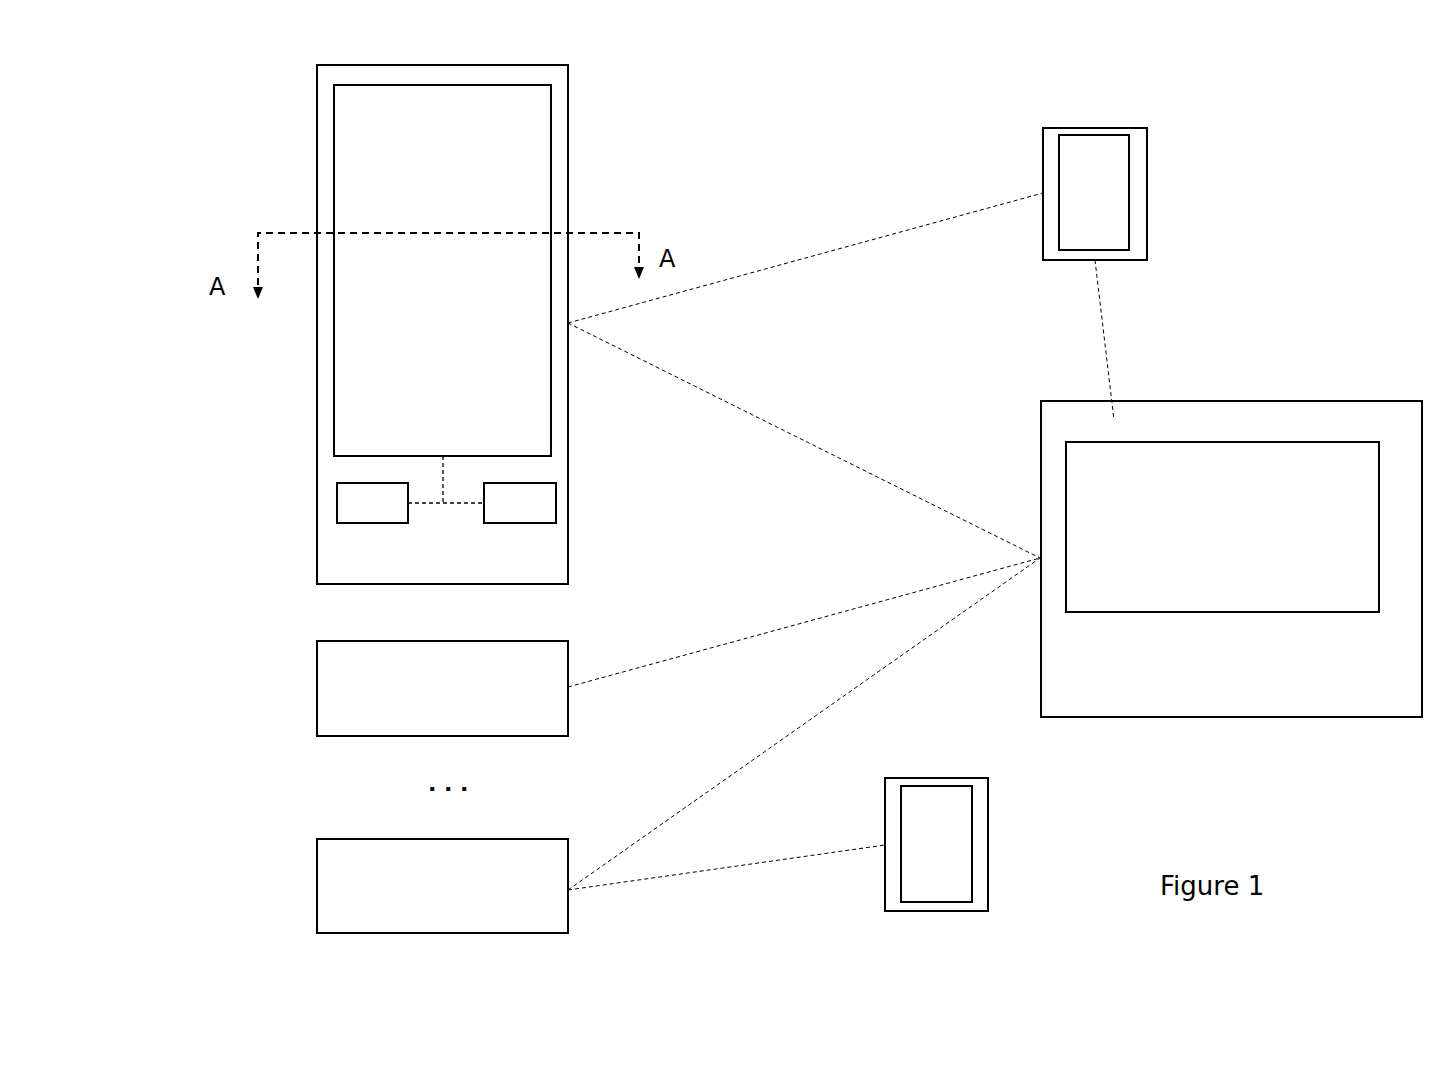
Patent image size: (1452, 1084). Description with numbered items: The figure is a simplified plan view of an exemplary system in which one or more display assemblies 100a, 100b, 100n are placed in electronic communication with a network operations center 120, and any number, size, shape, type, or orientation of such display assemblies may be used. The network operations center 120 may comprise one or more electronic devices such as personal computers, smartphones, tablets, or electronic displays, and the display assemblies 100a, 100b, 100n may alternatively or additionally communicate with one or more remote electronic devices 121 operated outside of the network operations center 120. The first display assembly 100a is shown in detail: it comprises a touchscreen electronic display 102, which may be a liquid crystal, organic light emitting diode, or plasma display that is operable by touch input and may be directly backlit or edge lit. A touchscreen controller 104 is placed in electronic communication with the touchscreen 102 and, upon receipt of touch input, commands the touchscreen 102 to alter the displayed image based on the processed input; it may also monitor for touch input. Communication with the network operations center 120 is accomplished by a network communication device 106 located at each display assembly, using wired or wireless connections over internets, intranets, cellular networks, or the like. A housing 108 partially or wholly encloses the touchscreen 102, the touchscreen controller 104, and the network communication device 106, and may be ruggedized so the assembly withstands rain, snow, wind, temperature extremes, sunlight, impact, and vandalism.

The display assembly 100a is at (228, 189).
The display assembly 100b is at (244, 692).
The display assembly 100n is at (252, 891).
The touchscreen electronic display 102 is at (373, 323).
The touchscreen controller 104 is at (337, 503).
The network communication device 106 is at (556, 505).
The housing 108 is at (562, 160).
The network operations center 120 is at (1166, 418).
The remote electronic device 121 is at (1113, 195).